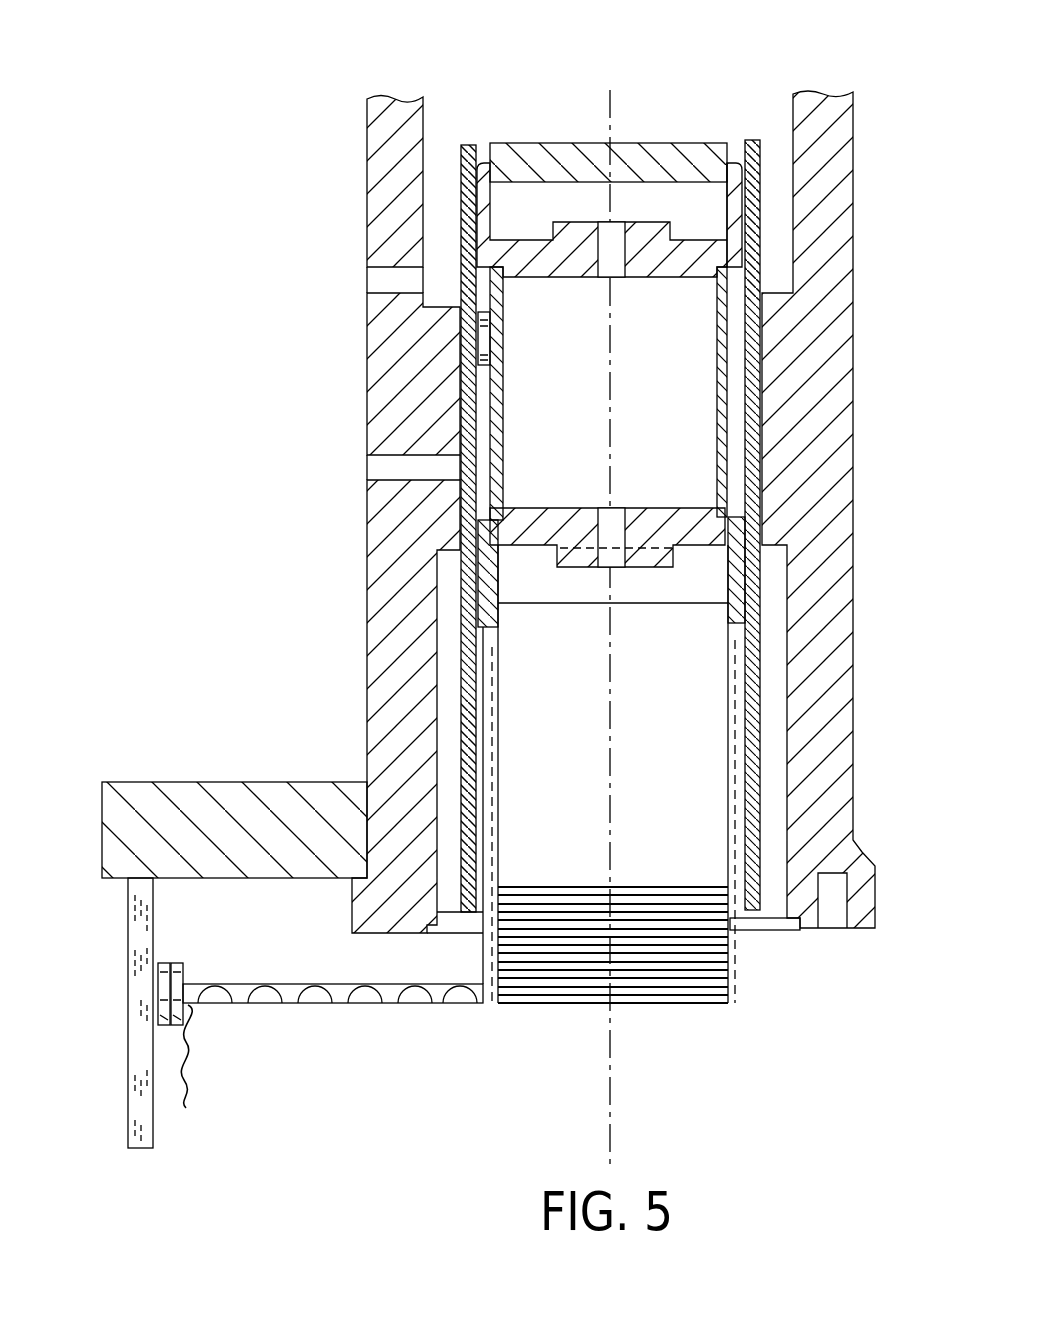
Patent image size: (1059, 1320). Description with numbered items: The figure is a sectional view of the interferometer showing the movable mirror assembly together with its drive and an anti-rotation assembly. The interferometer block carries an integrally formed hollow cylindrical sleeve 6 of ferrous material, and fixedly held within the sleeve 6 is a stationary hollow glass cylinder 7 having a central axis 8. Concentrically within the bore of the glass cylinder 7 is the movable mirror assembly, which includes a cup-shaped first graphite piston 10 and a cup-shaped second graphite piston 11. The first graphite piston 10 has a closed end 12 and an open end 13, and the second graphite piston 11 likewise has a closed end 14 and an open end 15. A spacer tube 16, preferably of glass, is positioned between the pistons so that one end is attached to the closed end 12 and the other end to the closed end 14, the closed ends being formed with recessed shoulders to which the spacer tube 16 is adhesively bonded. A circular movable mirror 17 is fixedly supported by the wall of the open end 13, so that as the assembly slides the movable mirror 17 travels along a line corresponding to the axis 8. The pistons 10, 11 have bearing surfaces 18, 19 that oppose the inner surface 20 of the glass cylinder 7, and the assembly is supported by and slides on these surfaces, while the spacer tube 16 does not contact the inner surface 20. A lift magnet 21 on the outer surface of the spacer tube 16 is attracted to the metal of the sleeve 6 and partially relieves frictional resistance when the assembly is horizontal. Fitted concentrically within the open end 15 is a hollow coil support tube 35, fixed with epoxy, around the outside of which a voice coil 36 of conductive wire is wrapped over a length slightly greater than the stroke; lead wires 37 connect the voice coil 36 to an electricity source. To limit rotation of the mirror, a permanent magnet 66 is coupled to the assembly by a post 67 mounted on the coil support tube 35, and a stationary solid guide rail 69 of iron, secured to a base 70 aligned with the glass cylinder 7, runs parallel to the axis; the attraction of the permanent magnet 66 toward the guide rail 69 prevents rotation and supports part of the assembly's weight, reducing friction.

The cylindrical sleeve 6 is at (335, 378).
The glass cylinder 7 is at (468, 676).
The central axis 8 is at (620, 128).
The first graphite piston 10 is at (752, 220).
The second graphite piston 11 is at (742, 534).
The closed end 12 is at (662, 284).
The open end 13 is at (738, 145).
The closed end 14 is at (677, 506).
The open end 15 is at (472, 632).
The spacer tube 16 is at (498, 422).
The movable mirror 17 is at (521, 138).
The bearing surface 18 is at (468, 207).
The bearing surface 19 is at (470, 536).
The inner surface 20 is at (468, 728).
The lift magnet 21 is at (470, 343).
The coil support tube 35 is at (683, 768).
The voice coil 36 is at (740, 972).
The lead wires 37 is at (192, 1090).
The permanent magnet 66 is at (180, 960).
The post 67 is at (400, 1007).
The guide rail 69 is at (124, 988).
The base 70 is at (120, 778).